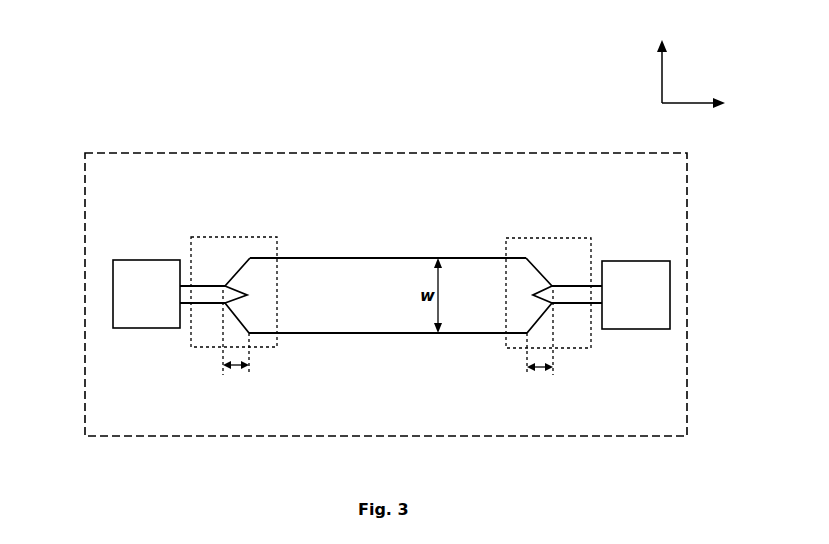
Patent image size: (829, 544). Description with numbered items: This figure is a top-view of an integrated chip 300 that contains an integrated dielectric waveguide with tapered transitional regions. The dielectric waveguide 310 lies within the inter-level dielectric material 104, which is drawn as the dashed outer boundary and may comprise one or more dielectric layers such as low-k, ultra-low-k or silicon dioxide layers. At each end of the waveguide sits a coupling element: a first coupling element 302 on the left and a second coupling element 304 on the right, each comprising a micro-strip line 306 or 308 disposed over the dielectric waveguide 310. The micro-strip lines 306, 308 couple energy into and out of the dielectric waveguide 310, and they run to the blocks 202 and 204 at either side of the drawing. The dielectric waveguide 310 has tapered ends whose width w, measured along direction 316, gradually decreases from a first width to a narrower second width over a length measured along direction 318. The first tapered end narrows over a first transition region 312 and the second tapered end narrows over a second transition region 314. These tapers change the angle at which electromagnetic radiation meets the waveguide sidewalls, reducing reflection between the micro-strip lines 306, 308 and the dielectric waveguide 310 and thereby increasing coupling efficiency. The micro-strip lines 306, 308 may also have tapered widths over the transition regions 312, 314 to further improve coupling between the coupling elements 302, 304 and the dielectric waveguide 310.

The integrated chip 300 is at (92, 89).
The inter-level dielectric material 104 is at (687, 293).
The first component 202 is at (146, 294).
The second component 204 is at (636, 295).
The first coupling element 302 is at (252, 237).
The second coupling element 304 is at (569, 238).
The micro-strip line 306 is at (198, 285).
The micro-strip line 308 is at (588, 283).
The dielectric waveguide 310 is at (388, 257).
The first transition region 312 is at (238, 345).
The second transition region 314 is at (541, 346).
The direction 316 is at (682, 61).
The direction 318 is at (703, 92).